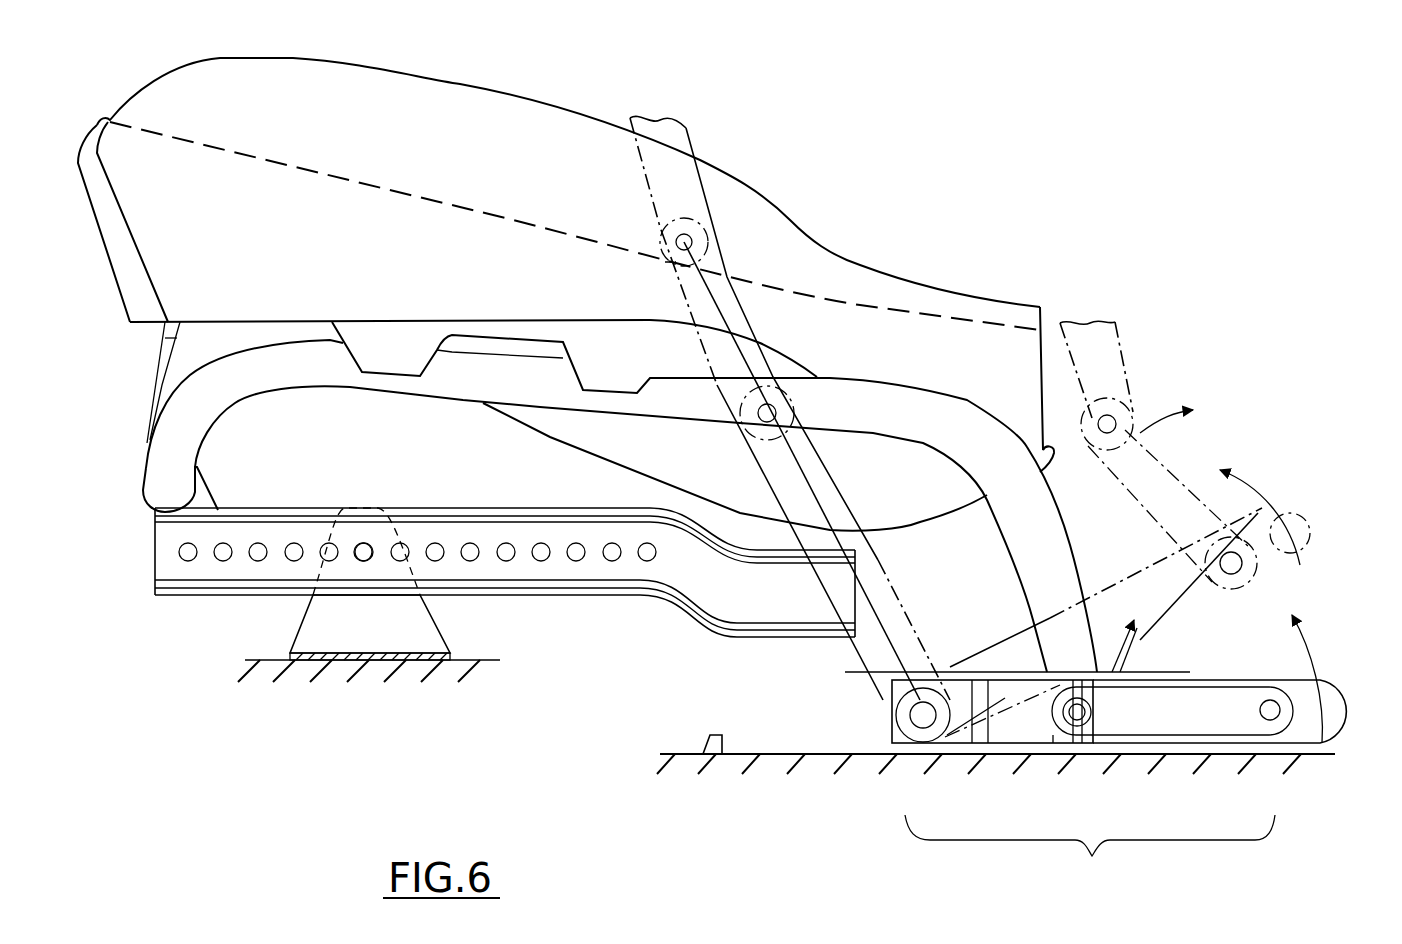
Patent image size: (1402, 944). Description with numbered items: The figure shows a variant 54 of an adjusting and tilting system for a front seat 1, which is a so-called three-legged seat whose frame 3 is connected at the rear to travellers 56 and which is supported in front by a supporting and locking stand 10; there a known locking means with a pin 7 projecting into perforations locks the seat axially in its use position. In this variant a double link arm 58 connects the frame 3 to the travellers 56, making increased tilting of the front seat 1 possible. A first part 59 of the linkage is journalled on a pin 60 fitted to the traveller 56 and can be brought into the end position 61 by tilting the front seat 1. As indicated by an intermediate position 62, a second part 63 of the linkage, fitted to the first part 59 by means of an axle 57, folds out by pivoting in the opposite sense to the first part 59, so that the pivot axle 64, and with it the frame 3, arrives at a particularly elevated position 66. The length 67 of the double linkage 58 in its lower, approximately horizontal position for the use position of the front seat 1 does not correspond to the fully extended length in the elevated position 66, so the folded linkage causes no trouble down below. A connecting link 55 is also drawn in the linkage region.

The front seat 1 is at (592, 96).
The frame 3 is at (660, 170).
The pin 7 is at (363, 552).
The supporting and locking stand 10 is at (313, 637).
The variant 54 is at (1158, 318).
The connecting link 55 is at (1152, 663).
The traveller 56 is at (895, 745).
The axle 57 is at (1272, 708).
The double link arm 58 is at (1040, 730).
The first part of the linkage 59 is at (1300, 742).
The pin 60 is at (920, 722).
The end position 61 is at (847, 563).
The intermediate position 62 is at (1296, 545).
The second part of the linkage 63 is at (722, 286).
The pivot axle 64 is at (690, 236).
The elevated position 66 is at (692, 240).
The length of the double linkage 67 is at (1090, 854).